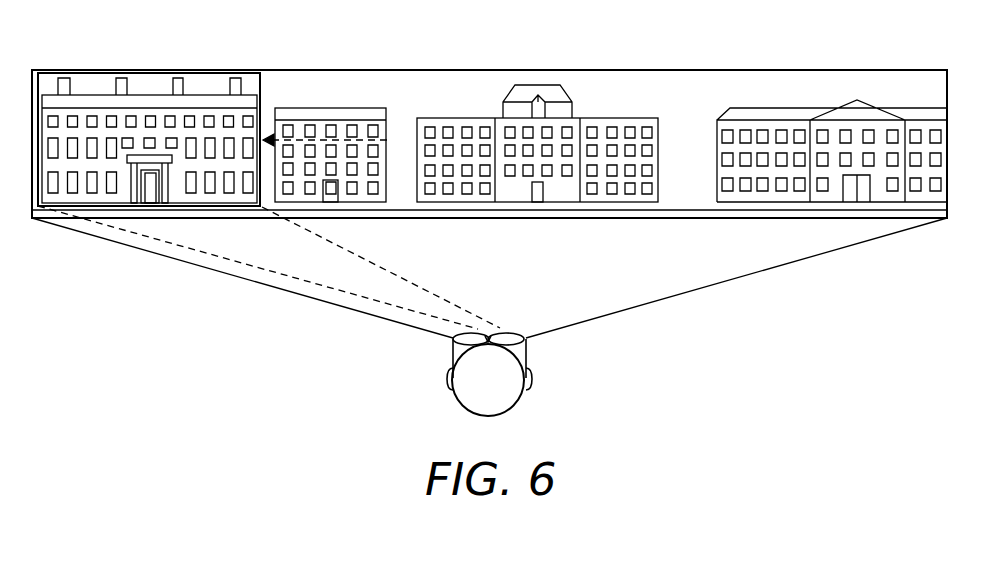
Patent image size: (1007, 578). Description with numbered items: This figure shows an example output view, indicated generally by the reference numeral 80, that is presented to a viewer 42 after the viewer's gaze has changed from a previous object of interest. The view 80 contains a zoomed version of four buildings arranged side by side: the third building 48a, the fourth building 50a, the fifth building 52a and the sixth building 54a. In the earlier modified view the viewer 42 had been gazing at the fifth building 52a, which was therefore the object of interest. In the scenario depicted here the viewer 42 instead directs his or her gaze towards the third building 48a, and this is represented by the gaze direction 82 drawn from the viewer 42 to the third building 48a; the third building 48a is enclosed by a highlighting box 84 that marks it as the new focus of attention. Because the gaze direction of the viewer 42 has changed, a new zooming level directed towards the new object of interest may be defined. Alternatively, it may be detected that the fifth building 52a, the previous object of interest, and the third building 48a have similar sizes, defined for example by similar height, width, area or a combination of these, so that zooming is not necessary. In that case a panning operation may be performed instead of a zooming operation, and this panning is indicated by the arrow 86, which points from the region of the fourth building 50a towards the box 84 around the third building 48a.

The viewer 42 is at (460, 400).
The third building 48a is at (148, 102).
The fourth building 50a is at (330, 113).
The fifth building 52a is at (538, 95).
The sixth building 54a is at (857, 110).
The view 80 is at (838, 288).
The gaze direction 82 is at (418, 285).
The selection box 84 is at (224, 73).
The arrow 86 is at (350, 145).